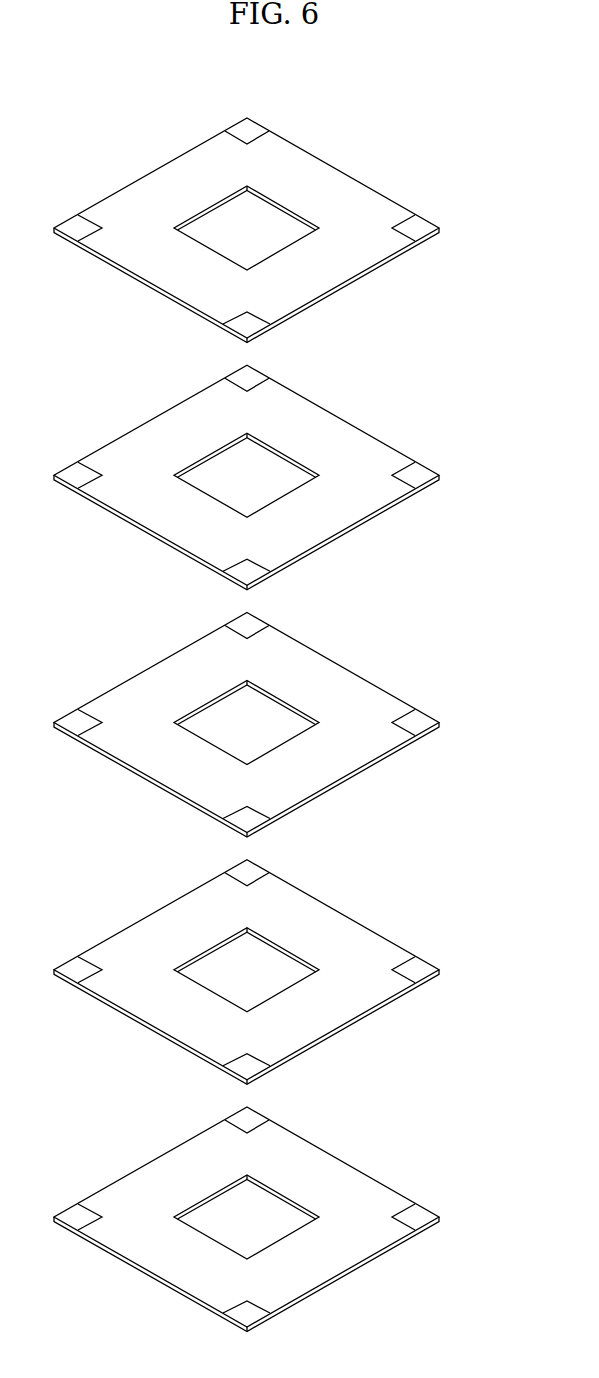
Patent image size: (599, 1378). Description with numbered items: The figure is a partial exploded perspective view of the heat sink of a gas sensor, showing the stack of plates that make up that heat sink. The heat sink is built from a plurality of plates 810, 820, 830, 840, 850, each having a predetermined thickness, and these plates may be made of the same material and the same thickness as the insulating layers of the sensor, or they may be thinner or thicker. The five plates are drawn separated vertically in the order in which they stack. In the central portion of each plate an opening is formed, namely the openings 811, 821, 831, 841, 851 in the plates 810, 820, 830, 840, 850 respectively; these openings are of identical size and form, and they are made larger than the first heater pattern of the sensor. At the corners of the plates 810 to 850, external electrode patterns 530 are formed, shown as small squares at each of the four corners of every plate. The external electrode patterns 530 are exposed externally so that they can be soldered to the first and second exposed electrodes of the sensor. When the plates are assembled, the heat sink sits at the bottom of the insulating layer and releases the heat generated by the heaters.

The plate 810 is at (246, 1219).
The opening 811 is at (260, 1175).
The plate 820 is at (246, 972).
The opening 821 is at (260, 928).
The plate 830 is at (246, 725).
The opening 831 is at (260, 681).
The plate 840 is at (246, 477).
The opening 841 is at (260, 433).
The plate 850 is at (352, 199).
The opening 851 is at (257, 210).
The external electrode pattern 530 is at (440, 1188).